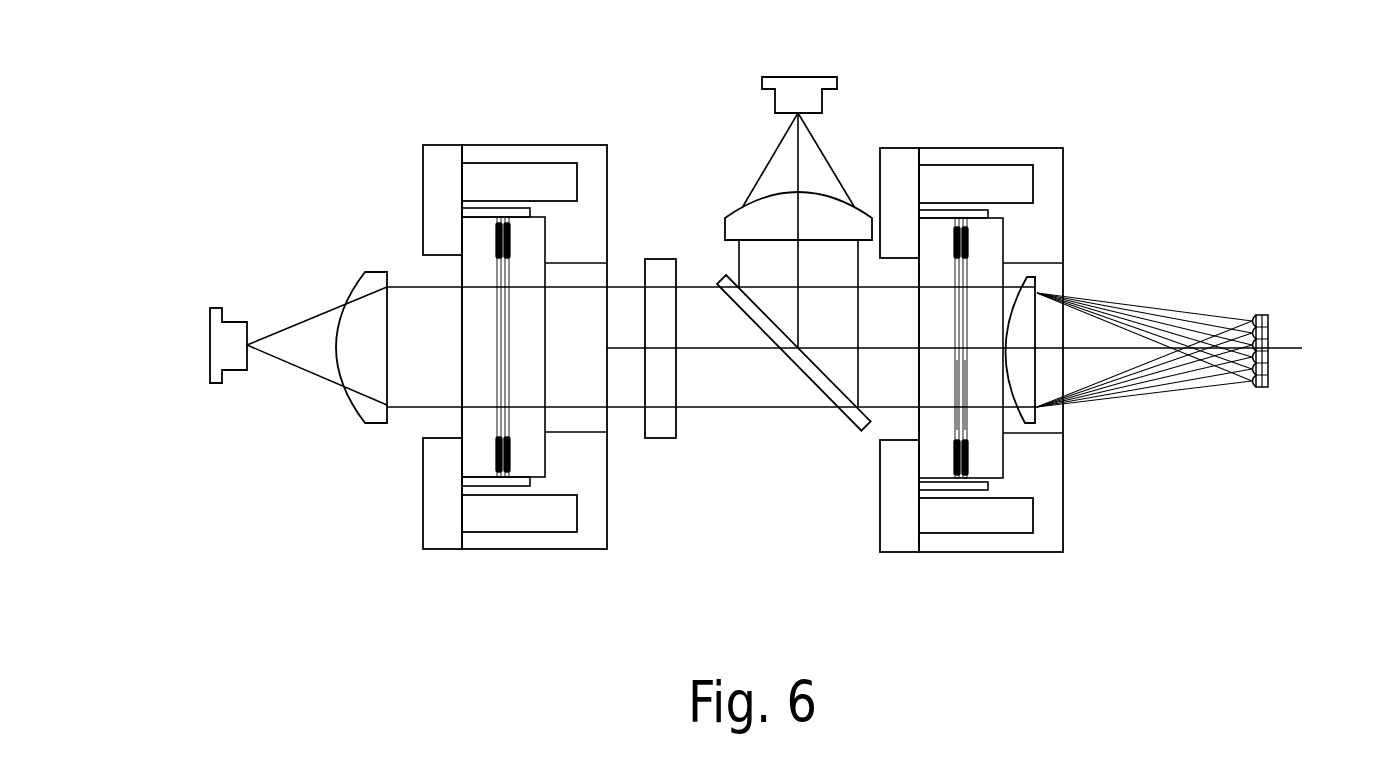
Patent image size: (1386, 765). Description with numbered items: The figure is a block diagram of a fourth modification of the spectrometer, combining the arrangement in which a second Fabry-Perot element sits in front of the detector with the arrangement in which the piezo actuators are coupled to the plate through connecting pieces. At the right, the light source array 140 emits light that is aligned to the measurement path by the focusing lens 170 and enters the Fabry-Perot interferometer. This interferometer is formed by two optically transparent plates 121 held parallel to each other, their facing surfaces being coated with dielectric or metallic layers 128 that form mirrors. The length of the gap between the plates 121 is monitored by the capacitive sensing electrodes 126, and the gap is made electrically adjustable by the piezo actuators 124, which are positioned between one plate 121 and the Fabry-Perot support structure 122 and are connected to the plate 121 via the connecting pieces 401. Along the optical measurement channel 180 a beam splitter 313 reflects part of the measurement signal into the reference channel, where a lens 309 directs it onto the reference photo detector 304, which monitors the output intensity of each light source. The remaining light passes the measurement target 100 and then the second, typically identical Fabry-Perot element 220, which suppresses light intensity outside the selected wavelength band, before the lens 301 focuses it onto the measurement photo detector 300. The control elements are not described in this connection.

The measurement photo detector 300 is at (222, 338).
The lens 301 is at (378, 275).
The second Fabry-Perot element 220 is at (531, 122).
The target 100 is at (652, 262).
The reference photo detector 304 is at (805, 82).
The lens 309 is at (763, 210).
The beam splitter 313 is at (813, 377).
The optical measurement channel 180 is at (722, 392).
The Fabry-Perot support structure 122 is at (866, 564).
The connecting pieces 401 is at (897, 150).
The piezo actuators 124 is at (972, 170).
The optically transparent plates 121 is at (942, 268).
The sensing electrodes 126 is at (968, 460).
The dielectric or metallic layers 128 is at (970, 367).
The focusing lens 170 is at (1030, 287).
The detector array 140 is at (1270, 333).